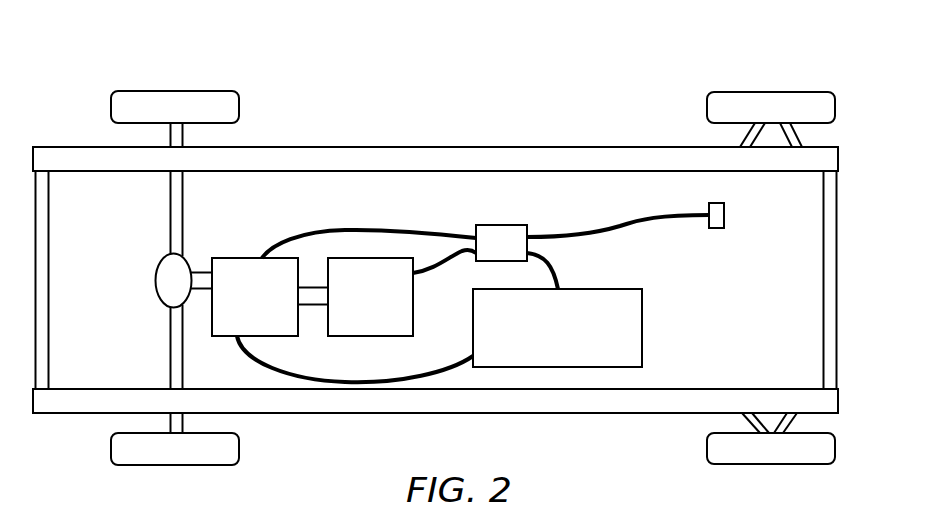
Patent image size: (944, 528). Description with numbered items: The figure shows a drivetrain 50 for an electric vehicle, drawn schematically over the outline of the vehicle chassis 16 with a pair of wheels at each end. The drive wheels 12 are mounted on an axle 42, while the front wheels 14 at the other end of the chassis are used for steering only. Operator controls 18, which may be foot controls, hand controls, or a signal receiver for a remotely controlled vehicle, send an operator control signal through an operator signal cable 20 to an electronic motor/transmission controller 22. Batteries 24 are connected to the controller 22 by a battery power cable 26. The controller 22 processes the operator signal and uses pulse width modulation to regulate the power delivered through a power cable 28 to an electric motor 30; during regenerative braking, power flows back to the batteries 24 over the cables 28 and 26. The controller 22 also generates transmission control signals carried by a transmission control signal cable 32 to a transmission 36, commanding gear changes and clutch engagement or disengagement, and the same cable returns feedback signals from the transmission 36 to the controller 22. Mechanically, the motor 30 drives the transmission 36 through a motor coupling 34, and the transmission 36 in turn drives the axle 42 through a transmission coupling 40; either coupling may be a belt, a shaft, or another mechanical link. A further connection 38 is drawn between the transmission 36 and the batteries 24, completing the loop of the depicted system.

The drive wheels 12 is at (175, 278).
The front wheels 14 is at (771, 278).
The vehicle frame 16 is at (572, 160).
The operator controls 18 is at (713, 222).
The operator signal cable 20 is at (637, 222).
The electronic motor/transmission controller 22 is at (501, 243).
The batteries 24 is at (557, 328).
The battery power cable 26 is at (567, 273).
The power cable 28 is at (436, 274).
The electric motor 30 is at (370, 297).
The transmission control signal cable 32 is at (340, 229).
The motor coupling 34 is at (314, 296).
The transmission 36 is at (255, 297).
The motor-battery cable 38 is at (393, 372).
The transmission coupling 40 is at (194, 284).
The axle 42 is at (165, 281).
The drivetrain 50 is at (475, 127).